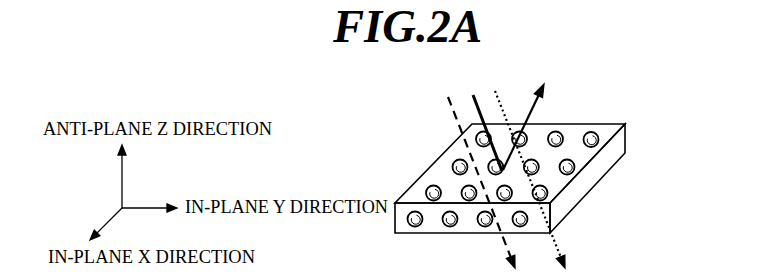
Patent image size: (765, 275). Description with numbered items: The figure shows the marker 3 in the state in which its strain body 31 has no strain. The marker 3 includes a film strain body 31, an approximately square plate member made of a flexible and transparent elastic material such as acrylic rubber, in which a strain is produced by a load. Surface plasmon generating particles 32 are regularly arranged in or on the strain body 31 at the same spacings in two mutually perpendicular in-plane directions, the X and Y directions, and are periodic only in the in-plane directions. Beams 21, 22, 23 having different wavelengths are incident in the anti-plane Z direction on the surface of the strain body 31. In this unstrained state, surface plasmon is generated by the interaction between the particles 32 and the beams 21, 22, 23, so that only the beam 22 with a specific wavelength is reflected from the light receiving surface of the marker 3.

The marker 3 is at (520, 131).
The strain body 31 is at (586, 182).
The surface plasmon generating particles 32 is at (597, 136).
The beam 21 is at (448, 97).
The beam 22 is at (475, 94).
The beam 23 is at (496, 91).